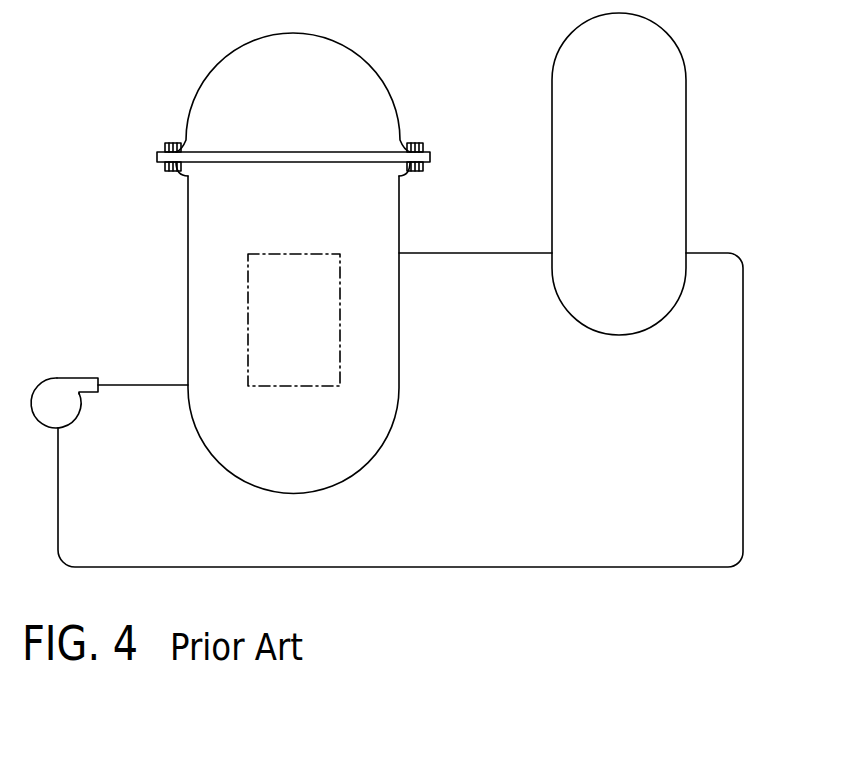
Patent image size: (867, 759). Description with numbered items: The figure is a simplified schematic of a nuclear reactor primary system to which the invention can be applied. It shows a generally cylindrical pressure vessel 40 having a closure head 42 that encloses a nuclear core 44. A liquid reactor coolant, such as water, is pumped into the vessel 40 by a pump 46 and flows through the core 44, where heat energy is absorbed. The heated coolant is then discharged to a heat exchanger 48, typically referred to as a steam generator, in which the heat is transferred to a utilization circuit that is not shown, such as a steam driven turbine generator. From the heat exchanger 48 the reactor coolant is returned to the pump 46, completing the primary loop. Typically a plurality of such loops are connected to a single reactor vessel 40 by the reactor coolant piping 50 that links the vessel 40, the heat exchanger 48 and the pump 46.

The pressure vessel 40 is at (404, 367).
The closure head 42 is at (200, 100).
The nuclear core 44 is at (248, 310).
The pump 46 is at (57, 378).
The heat exchanger 48 is at (687, 115).
The reactor coolant piping 50 is at (745, 497).